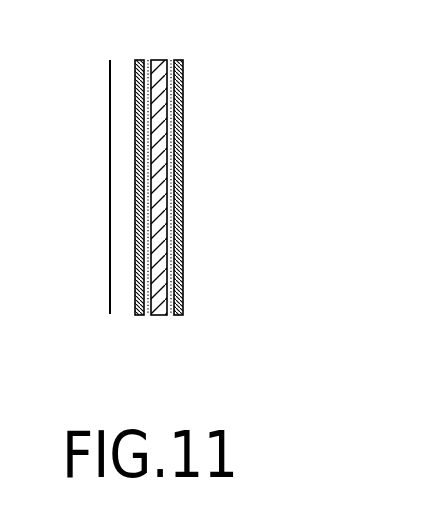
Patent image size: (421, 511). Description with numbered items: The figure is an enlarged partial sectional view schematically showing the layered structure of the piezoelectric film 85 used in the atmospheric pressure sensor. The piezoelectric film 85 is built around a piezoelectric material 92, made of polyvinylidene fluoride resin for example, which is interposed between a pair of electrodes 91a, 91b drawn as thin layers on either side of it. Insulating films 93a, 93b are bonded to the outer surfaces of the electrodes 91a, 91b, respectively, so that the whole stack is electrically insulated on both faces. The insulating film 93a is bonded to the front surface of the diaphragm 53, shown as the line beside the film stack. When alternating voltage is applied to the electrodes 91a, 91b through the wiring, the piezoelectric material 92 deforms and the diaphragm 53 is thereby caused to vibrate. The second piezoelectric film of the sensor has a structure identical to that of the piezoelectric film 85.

The diaphragm 53 is at (109, 106).
The insulating film 93a is at (137, 71).
The piezoelectric material 92 is at (170, 70).
The insulating film 93b is at (183, 72).
The piezoelectric film 85 is at (184, 190).
The electrode 91a is at (139, 313).
The electrode 91b is at (181, 313).